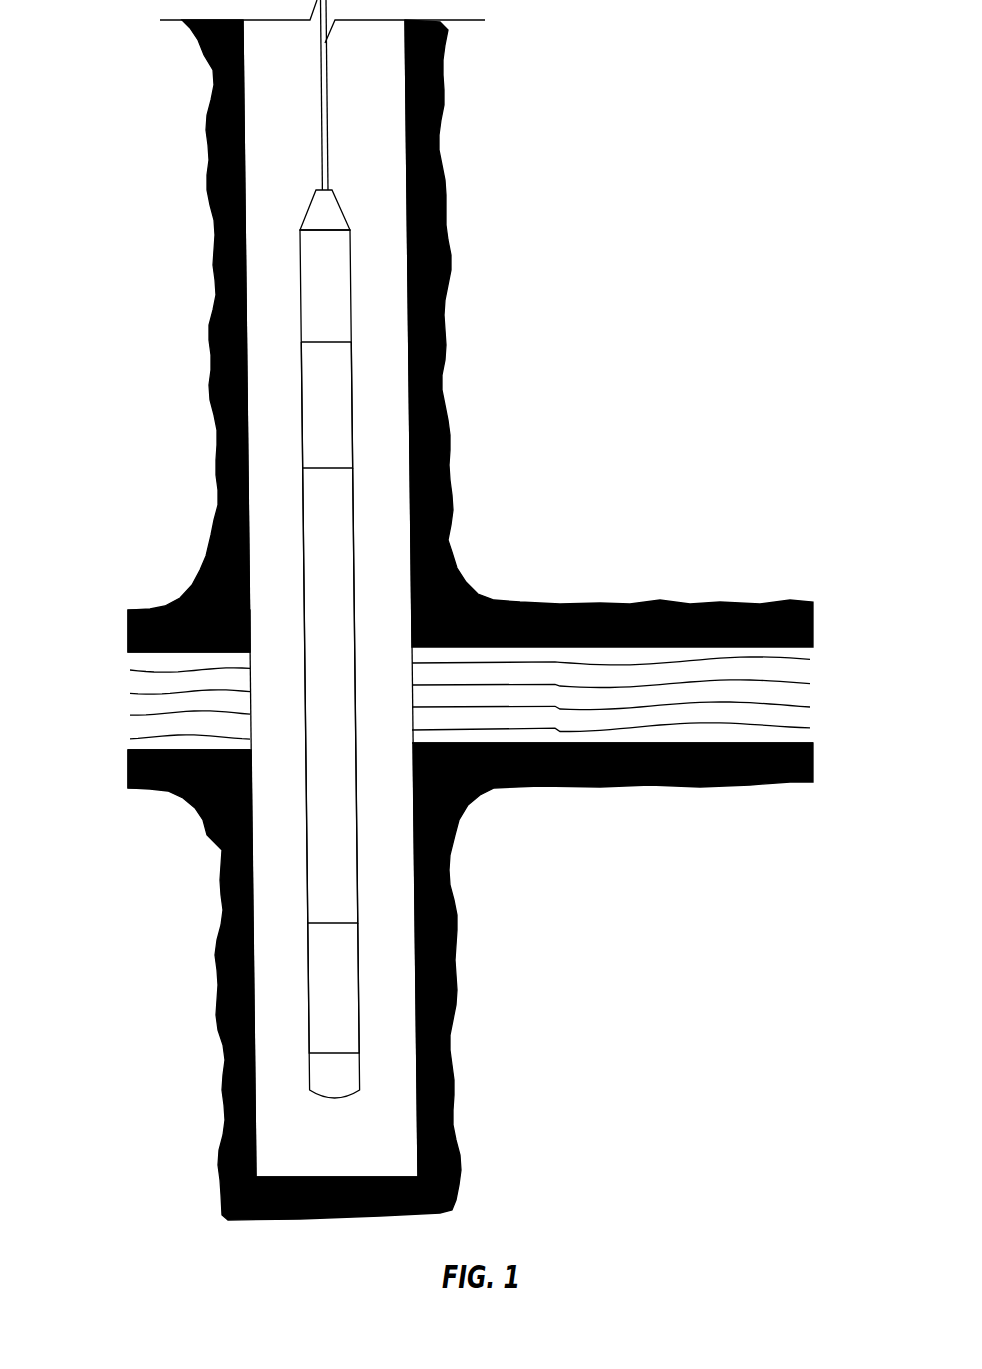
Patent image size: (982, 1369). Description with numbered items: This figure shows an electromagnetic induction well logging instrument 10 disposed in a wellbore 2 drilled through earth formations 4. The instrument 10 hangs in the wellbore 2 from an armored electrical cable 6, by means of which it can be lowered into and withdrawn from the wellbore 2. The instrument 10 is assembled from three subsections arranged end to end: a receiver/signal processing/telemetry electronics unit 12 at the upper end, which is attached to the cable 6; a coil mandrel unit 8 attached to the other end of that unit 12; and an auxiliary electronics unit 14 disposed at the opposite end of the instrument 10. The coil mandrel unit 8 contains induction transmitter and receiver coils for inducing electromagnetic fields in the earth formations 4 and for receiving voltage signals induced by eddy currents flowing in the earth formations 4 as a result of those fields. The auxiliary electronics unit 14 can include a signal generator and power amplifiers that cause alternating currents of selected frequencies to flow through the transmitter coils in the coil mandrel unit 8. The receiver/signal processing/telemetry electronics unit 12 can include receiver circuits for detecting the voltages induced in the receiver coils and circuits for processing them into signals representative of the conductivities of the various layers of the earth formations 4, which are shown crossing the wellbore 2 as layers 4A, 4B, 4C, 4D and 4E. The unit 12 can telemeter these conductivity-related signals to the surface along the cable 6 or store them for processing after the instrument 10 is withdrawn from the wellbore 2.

The wellbore 2 is at (377, 108).
The earth formations 4 is at (478, 699).
The layer of the earth formations 4A is at (805, 652).
The layer of the earth formations 4B is at (805, 673).
The layer of the earth formations 4C is at (805, 693).
The layer of the earth formations 4D is at (805, 715).
The layer of the earth formations 4E is at (805, 732).
The armored electrical cable 6 is at (303, 95).
The coil mandrel unit 8 is at (313, 695).
The electromagnetic induction well logging instrument 10 is at (372, 644).
The receiver/signal processing/telemetry electronics unit 12 is at (302, 405).
The auxiliary electronics unit 14 is at (308, 988).